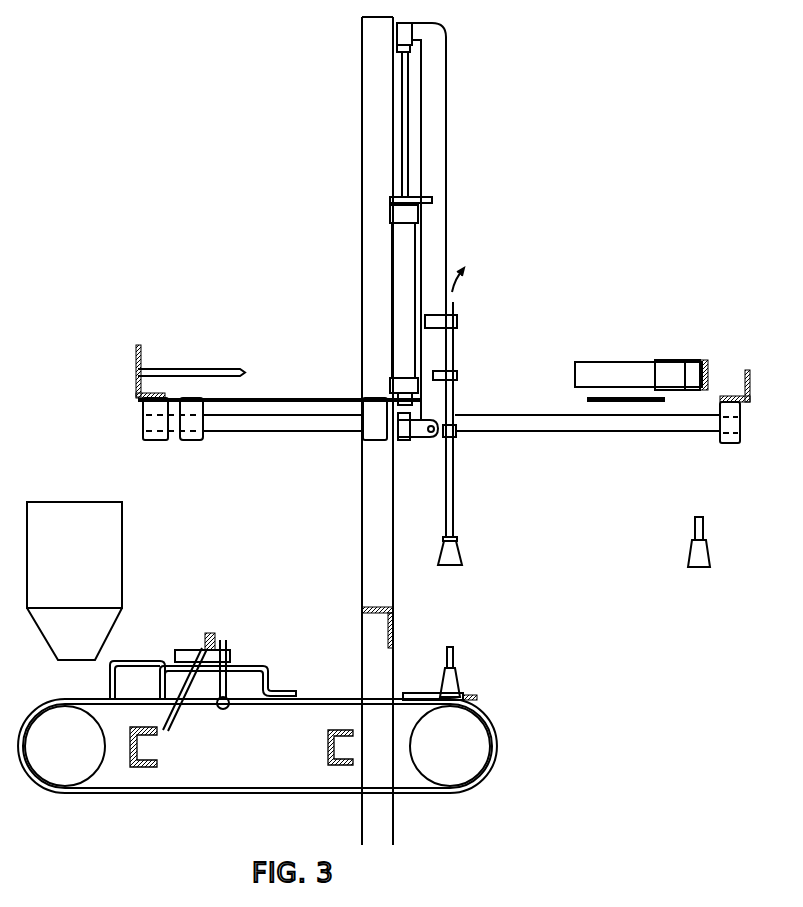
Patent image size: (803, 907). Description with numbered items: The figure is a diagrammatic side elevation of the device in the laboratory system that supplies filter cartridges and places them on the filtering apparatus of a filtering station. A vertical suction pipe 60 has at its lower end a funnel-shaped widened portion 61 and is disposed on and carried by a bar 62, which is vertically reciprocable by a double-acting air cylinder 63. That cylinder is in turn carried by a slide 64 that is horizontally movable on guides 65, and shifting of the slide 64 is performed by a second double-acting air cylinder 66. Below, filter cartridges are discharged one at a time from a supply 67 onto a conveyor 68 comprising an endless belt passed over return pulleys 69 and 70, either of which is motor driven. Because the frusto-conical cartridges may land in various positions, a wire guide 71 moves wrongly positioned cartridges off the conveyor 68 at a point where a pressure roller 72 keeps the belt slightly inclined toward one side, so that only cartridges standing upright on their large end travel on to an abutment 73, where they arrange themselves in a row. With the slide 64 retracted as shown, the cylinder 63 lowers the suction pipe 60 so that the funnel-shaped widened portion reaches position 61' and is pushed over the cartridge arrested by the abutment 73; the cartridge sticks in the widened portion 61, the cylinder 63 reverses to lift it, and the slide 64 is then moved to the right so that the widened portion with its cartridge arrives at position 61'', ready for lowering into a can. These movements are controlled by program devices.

The suction pipe 60 is at (451, 361).
The funnel-shaped widened portion 61 is at (472, 552).
The lowered position of funnel-shaped widened portion 61' is at (474, 671).
The shifted position of funnel-shaped widened portion 61'' is at (723, 542).
The bar 62 is at (433, 180).
The double-acting air cylinder 63 is at (403, 248).
The slide 64 is at (312, 398).
The guides 65 is at (532, 418).
The double-acting air cylinder 66 is at (623, 372).
The supply 67 is at (115, 563).
The conveyor 68 is at (190, 790).
The return pulley 69 is at (64, 773).
The return pulley 70 is at (460, 775).
The wire guide 71 is at (150, 663).
The pressure roller 72 is at (220, 710).
The abutment 73 is at (470, 695).